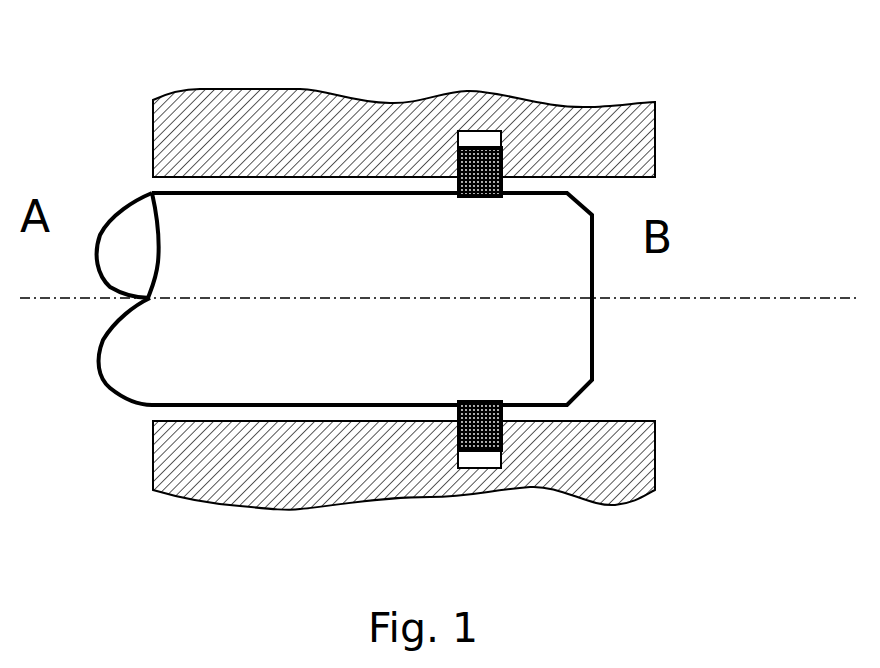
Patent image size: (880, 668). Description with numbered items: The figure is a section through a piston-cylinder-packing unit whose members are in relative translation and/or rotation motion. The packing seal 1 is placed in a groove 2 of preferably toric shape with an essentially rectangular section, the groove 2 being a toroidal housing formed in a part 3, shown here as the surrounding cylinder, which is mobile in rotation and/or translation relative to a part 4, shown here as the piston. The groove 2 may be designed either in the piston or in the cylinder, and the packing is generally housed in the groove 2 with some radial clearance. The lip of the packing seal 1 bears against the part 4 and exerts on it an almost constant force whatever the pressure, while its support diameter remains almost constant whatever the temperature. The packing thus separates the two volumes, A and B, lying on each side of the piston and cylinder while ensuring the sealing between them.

The packing seal 1 is at (455, 143).
The groove 2 is at (482, 140).
The part 3 is at (672, 134).
The part 4 is at (615, 332).